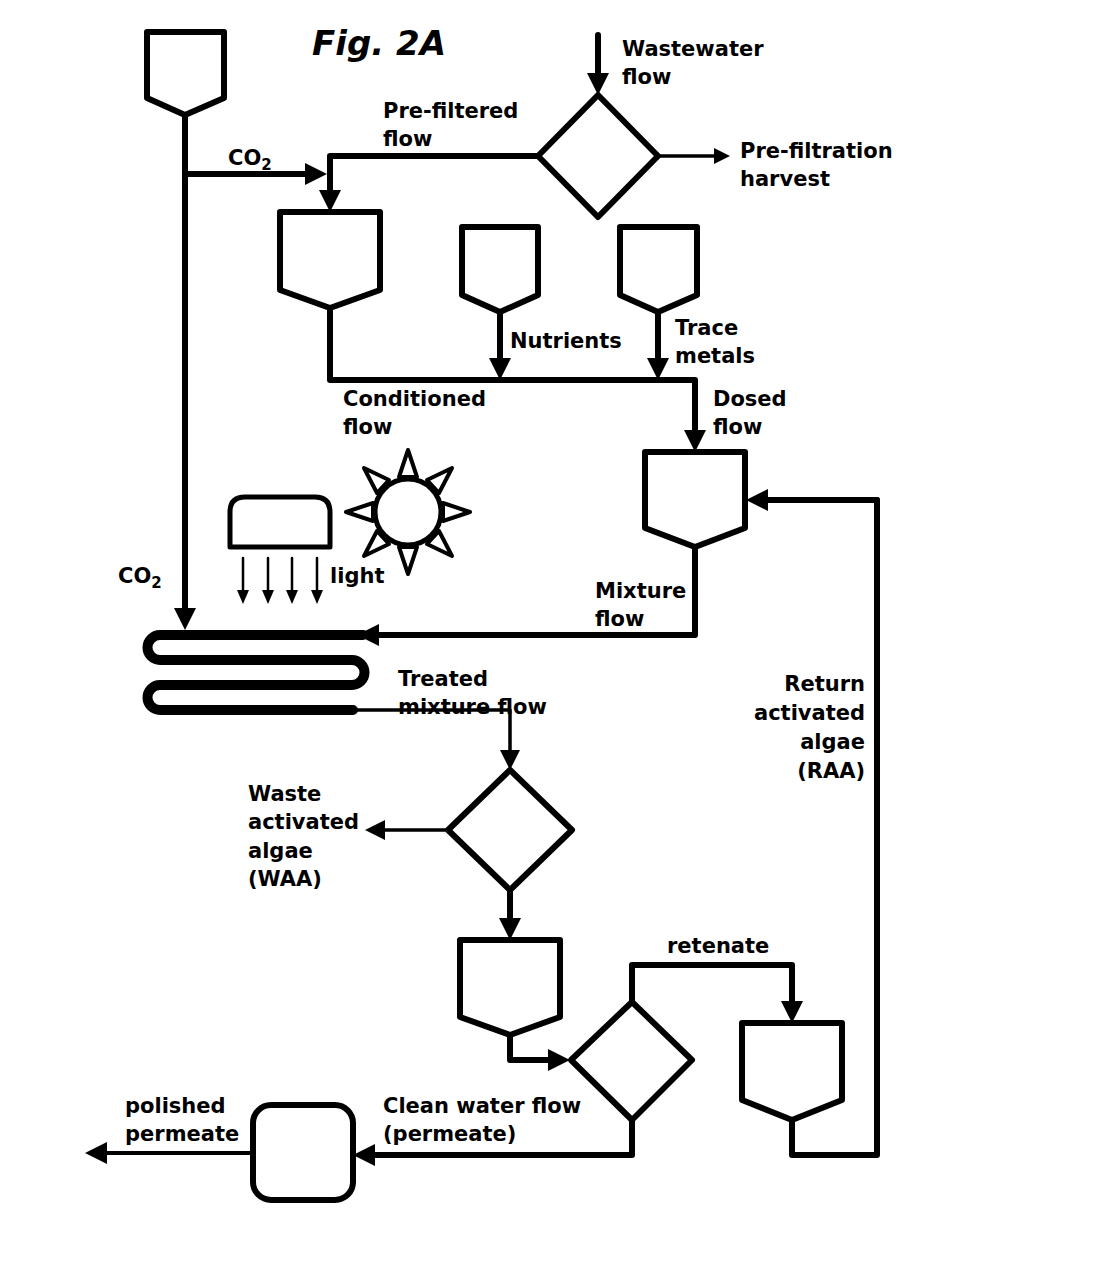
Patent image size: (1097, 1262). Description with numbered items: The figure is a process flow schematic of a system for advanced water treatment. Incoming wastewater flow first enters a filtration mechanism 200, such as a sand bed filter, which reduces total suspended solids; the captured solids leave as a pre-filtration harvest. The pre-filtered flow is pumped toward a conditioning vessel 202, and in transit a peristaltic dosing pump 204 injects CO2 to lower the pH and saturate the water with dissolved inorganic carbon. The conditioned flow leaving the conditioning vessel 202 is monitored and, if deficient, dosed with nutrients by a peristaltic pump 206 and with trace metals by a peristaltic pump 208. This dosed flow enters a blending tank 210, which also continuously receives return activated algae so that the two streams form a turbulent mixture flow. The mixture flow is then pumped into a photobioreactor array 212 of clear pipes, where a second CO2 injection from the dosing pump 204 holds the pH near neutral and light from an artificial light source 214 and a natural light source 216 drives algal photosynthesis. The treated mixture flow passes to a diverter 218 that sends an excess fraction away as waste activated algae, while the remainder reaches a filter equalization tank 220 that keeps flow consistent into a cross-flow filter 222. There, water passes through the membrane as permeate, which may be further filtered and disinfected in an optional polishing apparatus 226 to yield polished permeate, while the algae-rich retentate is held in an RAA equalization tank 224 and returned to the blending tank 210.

The filtration mechanism 200 is at (598, 156).
The conditioning vessel 202 is at (330, 260).
The peristaltic dosing pump 204 is at (185, 73).
The peristaltic pump 206 is at (500, 269).
The peristaltic pump 208 is at (658, 269).
The blending tank 210 is at (695, 499).
The photobioreactor array 212 is at (258, 725).
The artificial light source 214 is at (280, 522).
The natural light source 216 is at (408, 512).
The diverter 218 is at (510, 830).
The filter equalization tank 220 is at (510, 987).
The cross-flow filter 222 is at (631, 1061).
The RAA equalization tank 224 is at (792, 1071).
The polishing apparatus 226 is at (303, 1152).